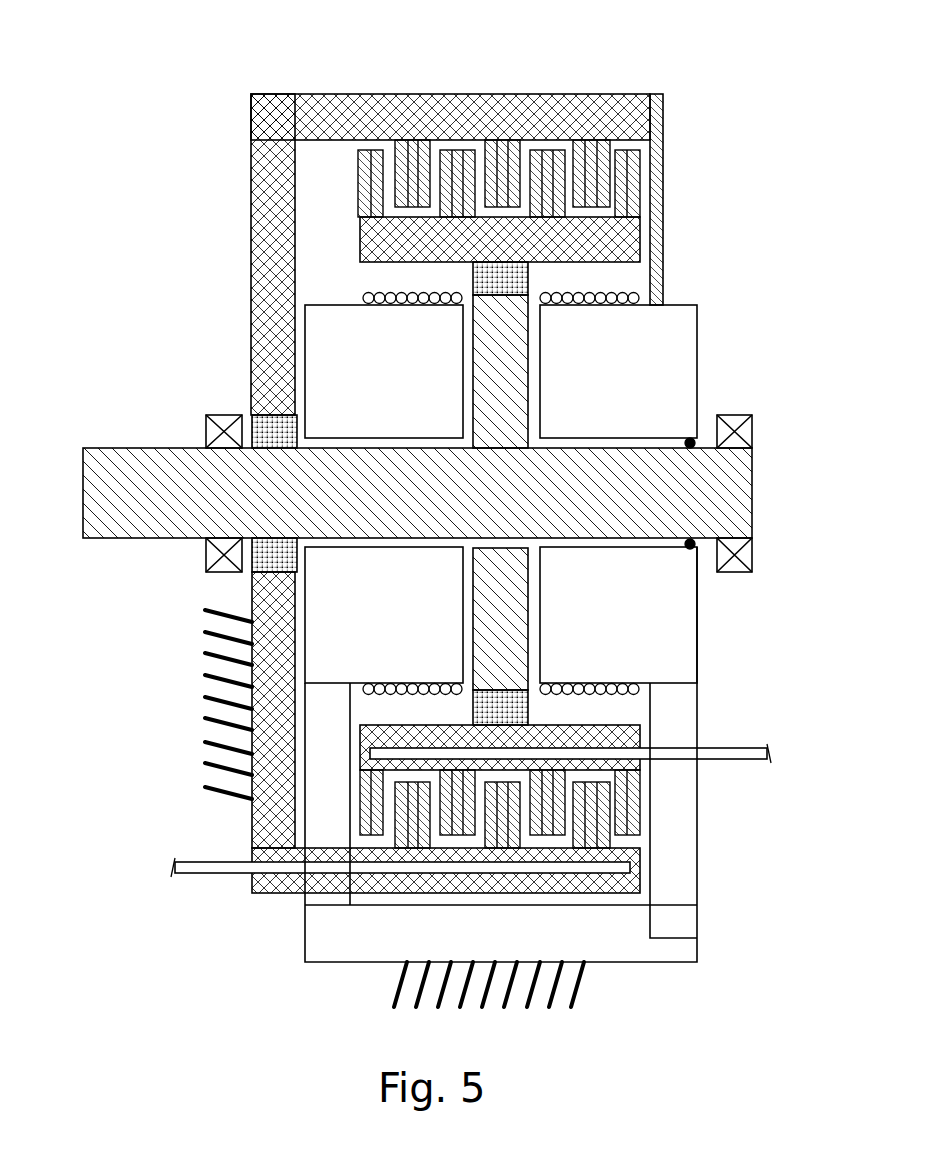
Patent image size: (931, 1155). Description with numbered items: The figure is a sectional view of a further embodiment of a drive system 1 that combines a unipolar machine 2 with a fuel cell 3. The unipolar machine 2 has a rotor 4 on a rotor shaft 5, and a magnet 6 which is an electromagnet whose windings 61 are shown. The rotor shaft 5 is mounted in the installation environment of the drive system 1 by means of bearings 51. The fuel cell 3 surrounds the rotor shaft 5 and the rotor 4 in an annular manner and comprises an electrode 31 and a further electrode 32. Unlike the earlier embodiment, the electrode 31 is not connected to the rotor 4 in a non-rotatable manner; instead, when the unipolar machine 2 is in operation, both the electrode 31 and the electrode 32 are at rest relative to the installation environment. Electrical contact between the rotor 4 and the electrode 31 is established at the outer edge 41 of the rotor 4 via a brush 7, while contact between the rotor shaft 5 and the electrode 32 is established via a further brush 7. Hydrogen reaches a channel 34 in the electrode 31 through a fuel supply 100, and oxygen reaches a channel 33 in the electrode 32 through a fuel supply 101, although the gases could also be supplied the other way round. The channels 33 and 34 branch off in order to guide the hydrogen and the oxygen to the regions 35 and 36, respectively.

The drive system 1 is at (198, 117).
The unipolar machine 2 is at (183, 689).
The fuel cell 3 is at (702, 150).
The rotor 4 is at (500, 476).
The rotor shaft 5 is at (138, 448).
The magnet 6 is at (375, 385).
The brush 7 is at (252, 583).
The electrode 31 is at (610, 268).
The further electrode 32 is at (628, 105).
The channel 33 is at (300, 895).
The channel 34 is at (665, 762).
The region 35 is at (378, 160).
The region 36 is at (520, 150).
The outer edge 41 is at (499, 685).
The bearings 51 is at (226, 415).
The windings 61 is at (365, 297).
The fuel supply 100 is at (730, 745).
The fuel supply 101 is at (233, 878).